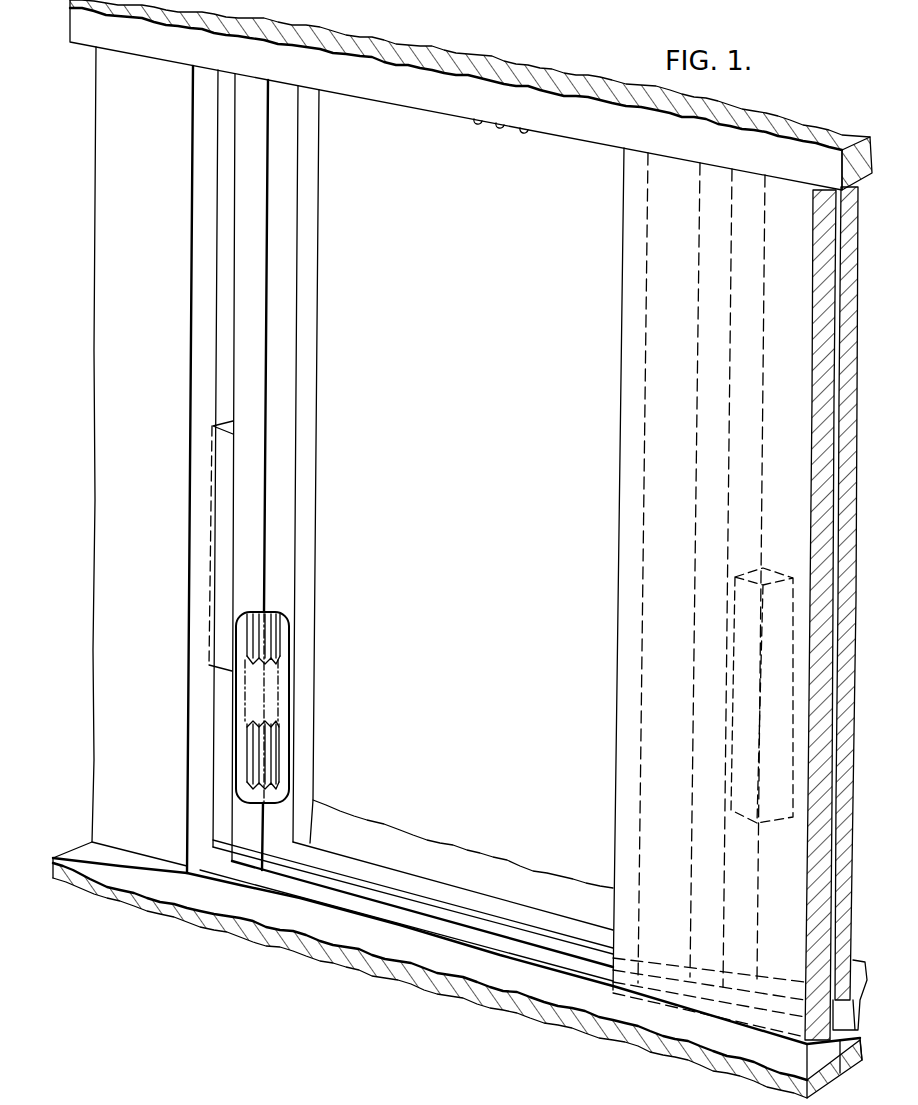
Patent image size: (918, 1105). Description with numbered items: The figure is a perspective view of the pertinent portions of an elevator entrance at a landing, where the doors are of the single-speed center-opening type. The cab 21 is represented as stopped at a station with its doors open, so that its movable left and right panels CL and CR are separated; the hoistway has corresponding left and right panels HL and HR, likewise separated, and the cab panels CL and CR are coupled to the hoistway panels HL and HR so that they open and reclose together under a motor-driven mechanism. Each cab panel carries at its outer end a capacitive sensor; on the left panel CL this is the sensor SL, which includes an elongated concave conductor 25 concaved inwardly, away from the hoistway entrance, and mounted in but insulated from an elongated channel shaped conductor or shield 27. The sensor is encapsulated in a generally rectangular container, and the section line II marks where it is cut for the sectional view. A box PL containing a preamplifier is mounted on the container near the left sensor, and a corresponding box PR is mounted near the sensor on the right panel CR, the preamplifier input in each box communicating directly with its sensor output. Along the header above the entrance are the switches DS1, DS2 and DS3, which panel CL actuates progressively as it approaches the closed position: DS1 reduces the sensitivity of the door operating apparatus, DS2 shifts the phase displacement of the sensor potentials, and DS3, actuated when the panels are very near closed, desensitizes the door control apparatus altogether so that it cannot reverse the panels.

The switch DS1 is at (457, 136).
The switch DS2 is at (500, 128).
The switch DS3 is at (528, 133).
The left cab door panel CL is at (311, 226).
The right cab door panel CR is at (848, 323).
The section line II- II is at (332, 335).
The left preamplifier box PL is at (220, 519).
The right preamplifier box PR is at (753, 608).
The left capacitive sensor SL is at (279, 639).
The channel shaped conductor or shield 27 is at (250, 723).
The concave conductor 25 is at (253, 731).
The cab 21 is at (473, 882).
The left hoistway door panel HL is at (177, 861).
The right hoistway door panel HR is at (612, 991).